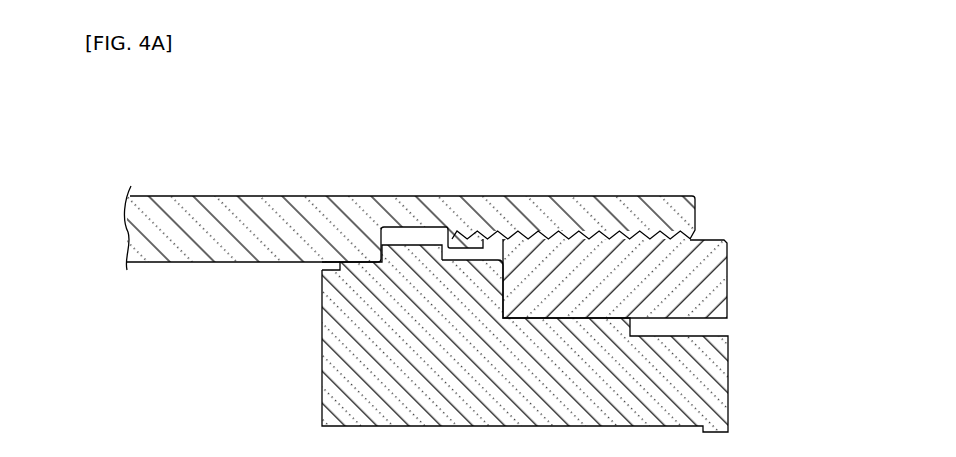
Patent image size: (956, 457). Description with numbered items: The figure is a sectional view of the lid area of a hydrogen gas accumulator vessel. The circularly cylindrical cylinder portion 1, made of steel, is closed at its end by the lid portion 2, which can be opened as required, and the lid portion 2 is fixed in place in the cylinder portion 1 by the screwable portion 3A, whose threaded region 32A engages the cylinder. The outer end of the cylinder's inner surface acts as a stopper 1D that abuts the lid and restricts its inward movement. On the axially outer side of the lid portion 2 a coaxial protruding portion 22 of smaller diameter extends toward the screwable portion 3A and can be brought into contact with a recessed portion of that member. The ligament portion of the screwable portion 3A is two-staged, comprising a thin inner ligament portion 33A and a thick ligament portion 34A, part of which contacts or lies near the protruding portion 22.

The circularly cylindrical cylinder portion 1 is at (173, 196).
The stopper 1D is at (358, 242).
The thin inner ligament portion 33A is at (462, 240).
The thick ligament portion 34A is at (483, 260).
The screw portion 32A is at (503, 303).
The screwable portion 3A is at (728, 275).
The protruding portion 22 is at (474, 295).
The lid portion 2 is at (728, 385).